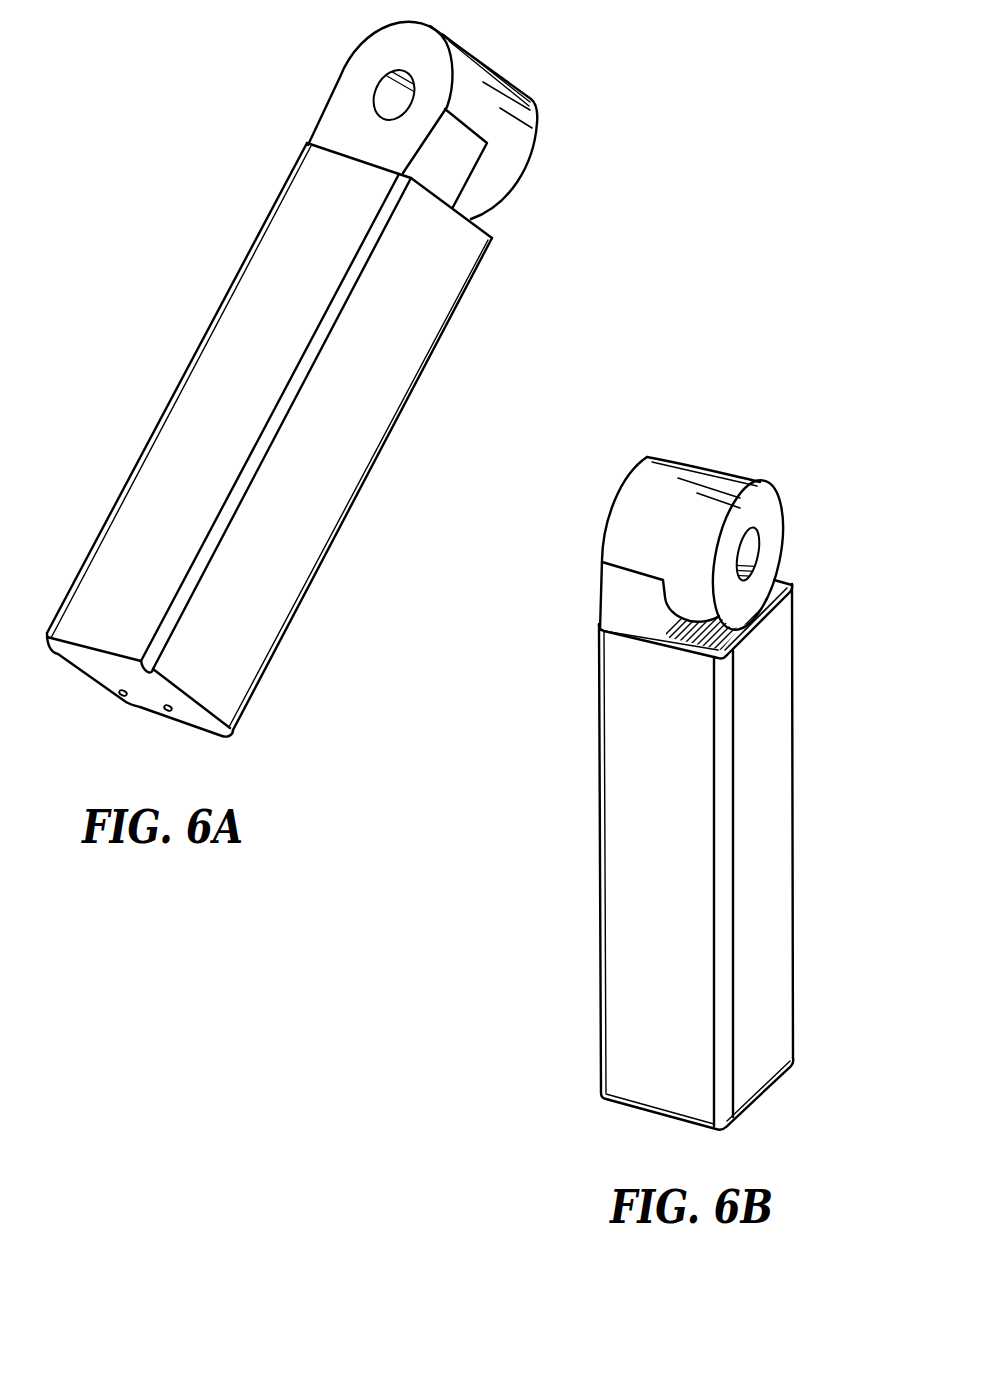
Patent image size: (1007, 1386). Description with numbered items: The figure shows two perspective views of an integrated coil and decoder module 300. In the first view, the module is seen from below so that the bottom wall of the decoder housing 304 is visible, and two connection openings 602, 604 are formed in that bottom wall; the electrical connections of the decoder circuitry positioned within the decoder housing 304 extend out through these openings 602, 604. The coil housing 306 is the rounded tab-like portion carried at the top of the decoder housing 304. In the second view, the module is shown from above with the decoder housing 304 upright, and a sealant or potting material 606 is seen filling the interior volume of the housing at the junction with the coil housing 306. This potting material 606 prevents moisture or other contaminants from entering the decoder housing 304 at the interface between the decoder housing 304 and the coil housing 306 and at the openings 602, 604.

In FIG. 6A, the integrated coil and decoder module 300 is at (566, 121).
In FIG. 6B, the integrated coil and decoder module 300 is at (812, 489).
In FIG. 6A, the decoder housing 304 is at (374, 484).
In FIG. 6B, the decoder housing 304 is at (804, 828).
In FIG. 6A, the coil housing 306 is at (372, 43).
In FIG. 6B, the coil housing 306 is at (629, 468).
In FIG. 6A, the connection opening 602 is at (121, 698).
In FIG. 6A, the connection opening 604 is at (165, 714).
In FIG. 6B, the sealant or potting material 606 is at (779, 583).